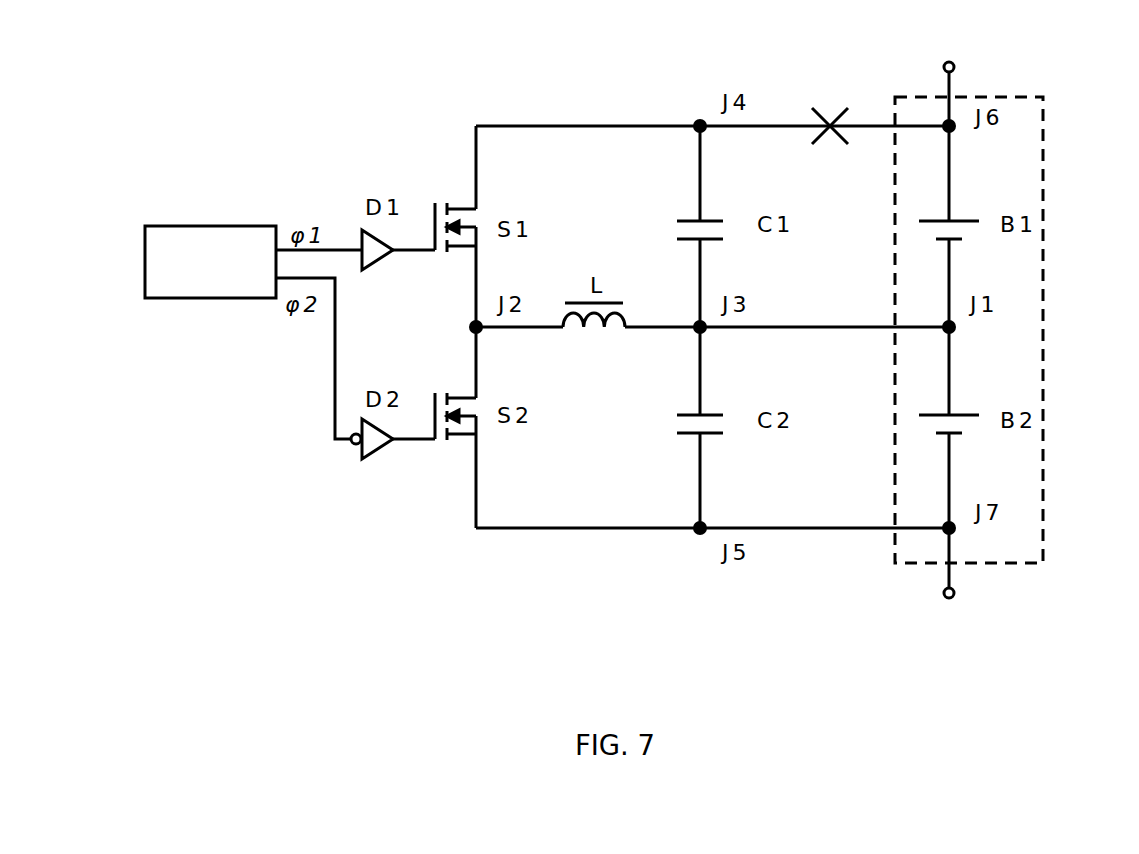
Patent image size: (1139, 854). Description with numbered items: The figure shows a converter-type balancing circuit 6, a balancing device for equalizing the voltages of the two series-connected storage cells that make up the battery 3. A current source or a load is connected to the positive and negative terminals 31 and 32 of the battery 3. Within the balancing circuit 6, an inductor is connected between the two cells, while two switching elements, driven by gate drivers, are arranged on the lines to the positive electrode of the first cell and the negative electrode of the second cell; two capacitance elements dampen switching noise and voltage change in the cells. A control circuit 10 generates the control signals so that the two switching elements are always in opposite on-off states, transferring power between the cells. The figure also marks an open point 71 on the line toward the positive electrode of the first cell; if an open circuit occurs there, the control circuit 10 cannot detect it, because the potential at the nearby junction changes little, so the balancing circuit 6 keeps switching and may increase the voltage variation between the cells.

The converter-type balancing circuit 6 is at (575, 84).
The control circuit 10 is at (216, 226).
The battery 3 is at (1040, 97).
The positive terminal 31 is at (954, 65).
The negative terminal 32 is at (954, 595).
The open point 71 is at (850, 106).